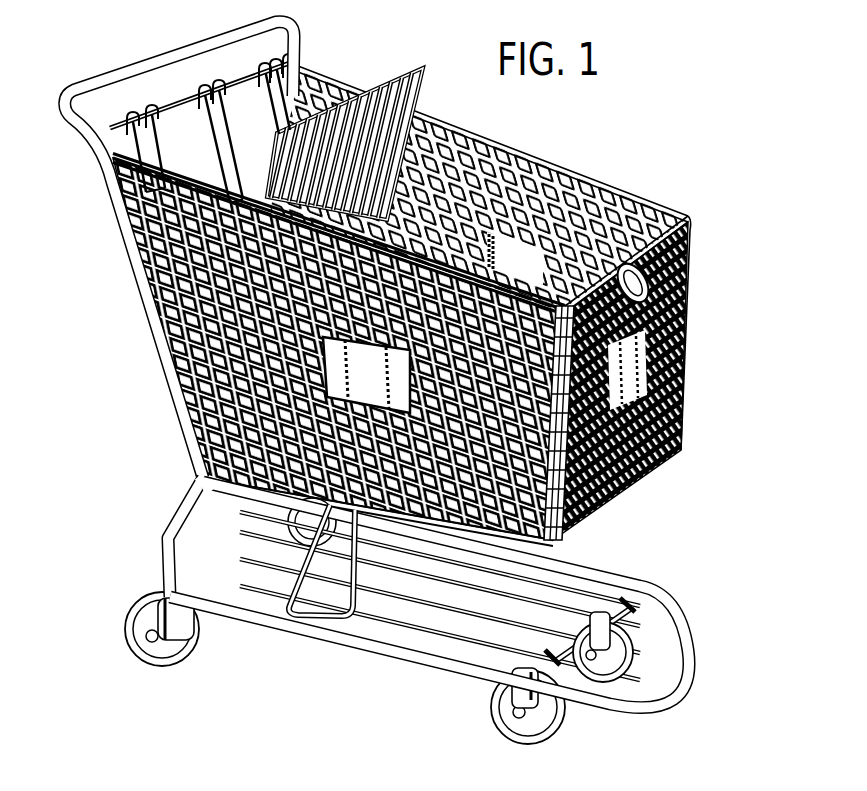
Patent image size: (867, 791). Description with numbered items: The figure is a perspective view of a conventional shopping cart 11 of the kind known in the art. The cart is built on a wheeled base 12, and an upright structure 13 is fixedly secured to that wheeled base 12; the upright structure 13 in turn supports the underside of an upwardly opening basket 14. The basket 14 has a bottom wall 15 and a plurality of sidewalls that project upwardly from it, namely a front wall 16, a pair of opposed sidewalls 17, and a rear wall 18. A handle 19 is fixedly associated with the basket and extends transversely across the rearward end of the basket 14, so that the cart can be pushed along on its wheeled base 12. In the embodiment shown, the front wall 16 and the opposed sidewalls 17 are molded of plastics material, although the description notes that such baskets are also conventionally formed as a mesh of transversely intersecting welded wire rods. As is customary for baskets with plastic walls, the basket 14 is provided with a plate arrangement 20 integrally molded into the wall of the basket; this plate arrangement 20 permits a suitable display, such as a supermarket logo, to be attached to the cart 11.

The shopping cart 11 is at (122, 442).
The wheeled base 12 is at (380, 641).
The upright structure 13 is at (170, 530).
The basket 14 is at (698, 251).
The bottom wall 15 is at (607, 507).
The front wall 16 is at (684, 404).
The opposed sidewalls 17 is at (167, 311).
The rear wall 18 is at (223, 93).
The handle 19 is at (150, 53).
The plate arrangement 20 is at (684, 340).